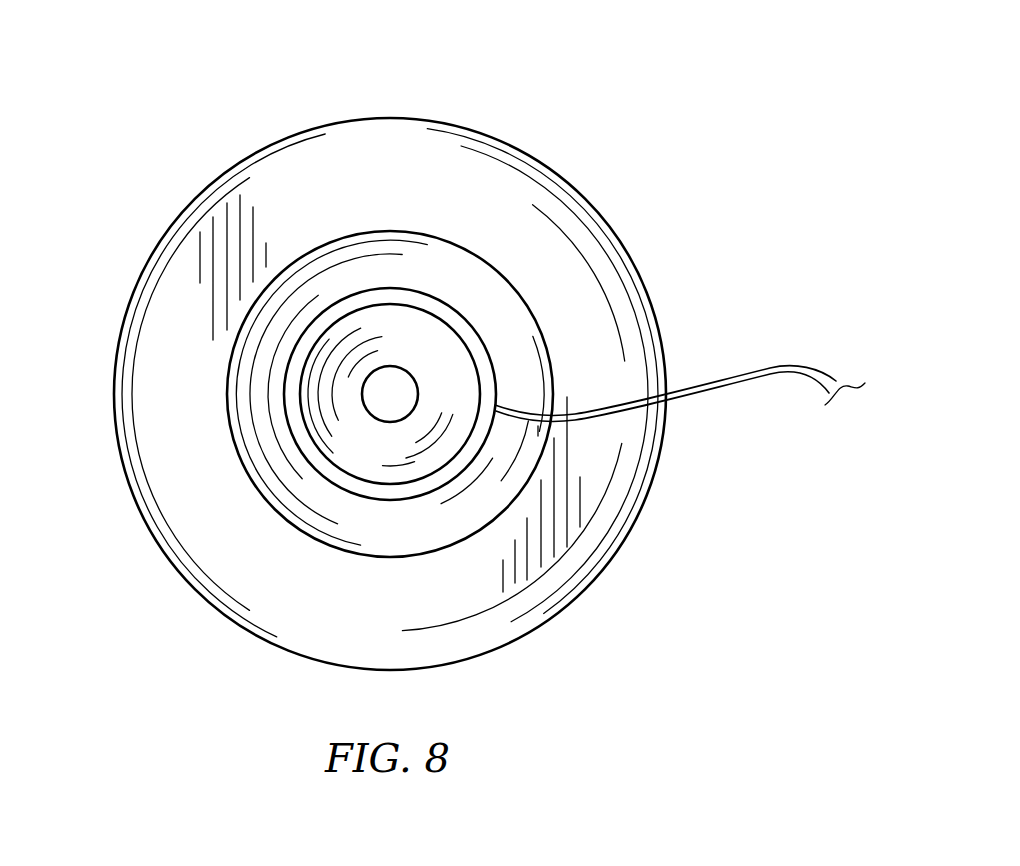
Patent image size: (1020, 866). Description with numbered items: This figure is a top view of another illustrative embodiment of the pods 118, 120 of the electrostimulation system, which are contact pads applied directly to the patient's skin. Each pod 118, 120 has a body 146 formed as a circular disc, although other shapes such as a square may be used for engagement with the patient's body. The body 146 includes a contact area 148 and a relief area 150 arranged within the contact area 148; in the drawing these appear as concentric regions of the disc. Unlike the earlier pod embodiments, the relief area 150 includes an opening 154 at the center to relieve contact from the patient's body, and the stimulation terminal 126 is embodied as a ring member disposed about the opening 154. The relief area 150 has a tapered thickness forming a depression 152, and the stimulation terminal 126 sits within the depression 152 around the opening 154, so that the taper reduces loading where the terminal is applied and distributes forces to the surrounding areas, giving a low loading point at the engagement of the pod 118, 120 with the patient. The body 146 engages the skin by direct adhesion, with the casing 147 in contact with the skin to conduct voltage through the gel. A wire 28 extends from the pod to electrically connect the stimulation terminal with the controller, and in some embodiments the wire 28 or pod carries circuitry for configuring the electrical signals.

The wire 28 is at (768, 390).
The pod 118 is at (399, 335).
The pod 120 is at (399, 335).
The stimulation terminal 126 is at (483, 334).
The body 146 is at (175, 192).
The casing 147 is at (372, 106).
The contact area 148 is at (602, 519).
The relief area 150 is at (389, 425).
The depression 152 is at (420, 462).
The opening 154 is at (511, 467).